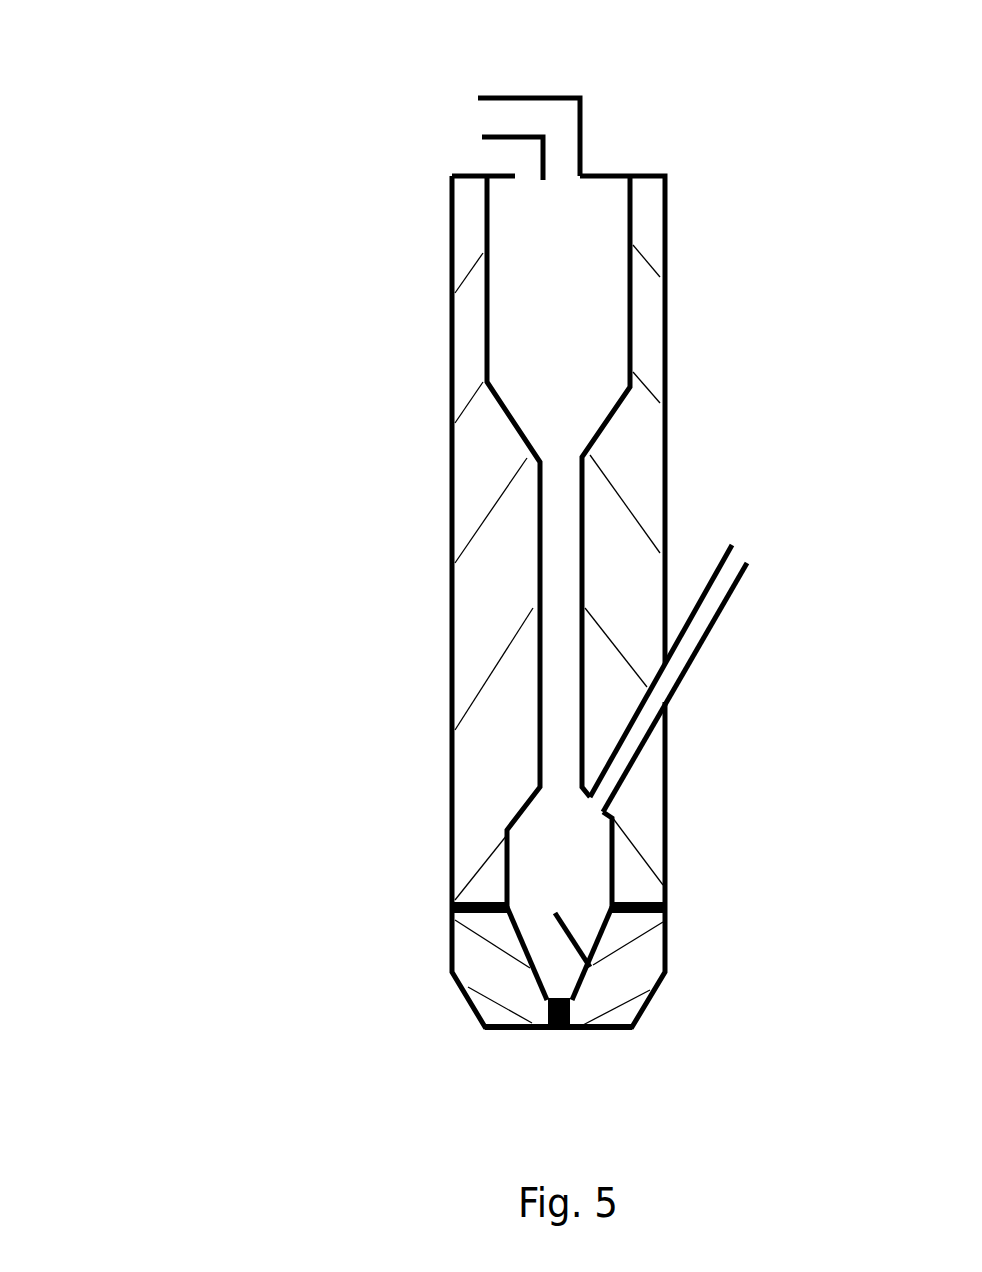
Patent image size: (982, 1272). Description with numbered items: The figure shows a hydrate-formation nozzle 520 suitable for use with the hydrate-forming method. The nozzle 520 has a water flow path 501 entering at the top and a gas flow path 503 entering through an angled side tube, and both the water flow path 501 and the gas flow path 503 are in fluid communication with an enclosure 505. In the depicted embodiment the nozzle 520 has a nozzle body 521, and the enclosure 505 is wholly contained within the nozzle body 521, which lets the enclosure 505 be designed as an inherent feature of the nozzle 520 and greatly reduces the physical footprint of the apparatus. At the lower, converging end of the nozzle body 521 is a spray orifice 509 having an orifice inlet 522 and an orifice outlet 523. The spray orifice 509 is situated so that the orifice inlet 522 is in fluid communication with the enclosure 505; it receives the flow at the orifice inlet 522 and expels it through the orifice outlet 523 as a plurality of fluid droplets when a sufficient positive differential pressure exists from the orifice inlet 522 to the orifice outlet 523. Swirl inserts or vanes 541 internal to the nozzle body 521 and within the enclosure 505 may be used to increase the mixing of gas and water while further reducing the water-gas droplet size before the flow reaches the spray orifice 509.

The water flow path 501 is at (554, 98).
The gas flow path 503 is at (697, 660).
The enclosure 505 is at (560, 872).
The spray orifice 509 is at (547, 1012).
The nozzle 520 is at (186, 279).
The nozzle body 521 is at (478, 472).
The orifice inlet 522 is at (562, 998).
The orifice outlet 523 is at (551, 1030).
The swirl inserts or vanes 541 is at (573, 935).